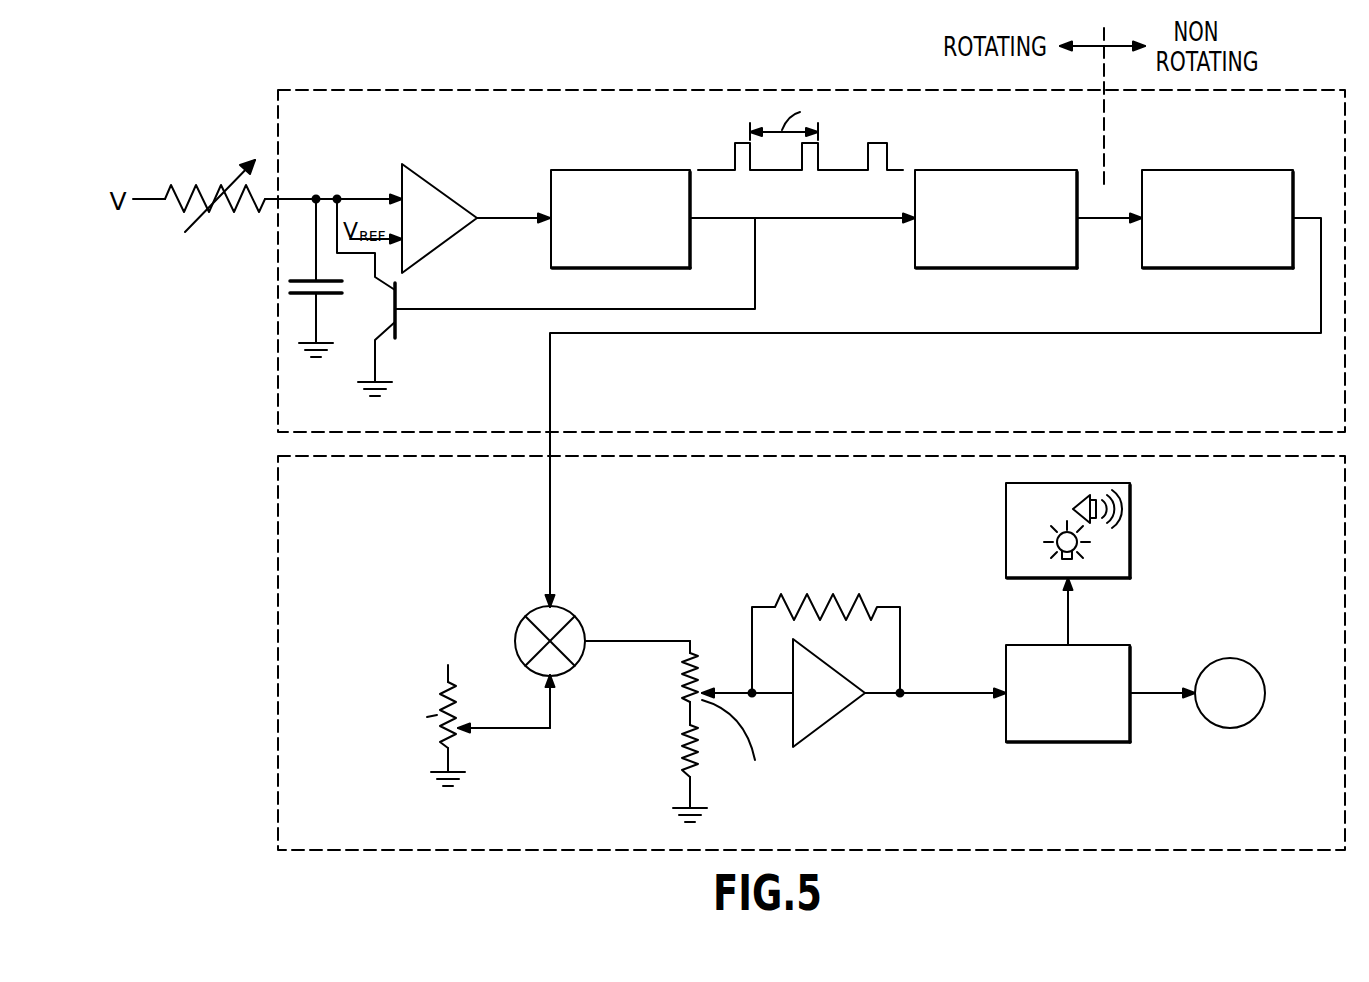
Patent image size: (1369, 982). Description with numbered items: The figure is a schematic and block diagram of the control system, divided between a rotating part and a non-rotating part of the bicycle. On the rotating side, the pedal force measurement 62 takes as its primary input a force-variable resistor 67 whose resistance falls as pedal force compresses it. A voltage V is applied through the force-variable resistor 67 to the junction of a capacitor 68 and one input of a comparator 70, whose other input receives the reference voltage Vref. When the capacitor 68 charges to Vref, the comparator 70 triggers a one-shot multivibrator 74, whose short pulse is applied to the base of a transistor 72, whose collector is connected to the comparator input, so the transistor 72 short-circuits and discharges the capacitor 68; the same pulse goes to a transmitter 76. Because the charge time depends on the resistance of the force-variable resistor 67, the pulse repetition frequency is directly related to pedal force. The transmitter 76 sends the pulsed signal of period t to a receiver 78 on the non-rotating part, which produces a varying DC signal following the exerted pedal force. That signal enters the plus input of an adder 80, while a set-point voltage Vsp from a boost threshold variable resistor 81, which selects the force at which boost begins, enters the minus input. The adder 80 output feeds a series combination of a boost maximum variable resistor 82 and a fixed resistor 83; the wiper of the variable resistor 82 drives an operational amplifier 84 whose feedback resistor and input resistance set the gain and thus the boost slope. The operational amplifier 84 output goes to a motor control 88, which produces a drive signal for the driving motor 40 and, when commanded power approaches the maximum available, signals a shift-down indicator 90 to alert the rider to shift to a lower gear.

The pedal force measurement 62 is at (652, 90).
The force-variable resistor 67 is at (178, 195).
The capacitor 68 is at (300, 296).
The comparator 70 is at (445, 178).
The transistor 72 is at (403, 300).
The one-shot multivibrator 74 is at (662, 168).
The transmitter 76 is at (1032, 170).
The receiver 78 is at (1267, 170).
The adder 80 is at (578, 620).
The boost threshold variable resistor 81 is at (448, 692).
The boost maximum variable resistor 82 is at (683, 680).
The fixed resistor 83 is at (683, 735).
The operational amplifier 84 is at (795, 602).
The motor control 88 is at (1103, 643).
The shift-down indicator 90 is at (1006, 520).
The driving motor 40 is at (1232, 656).